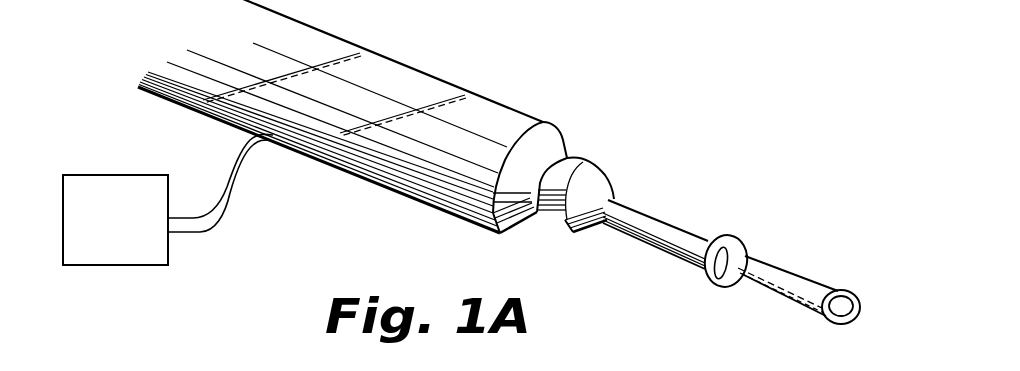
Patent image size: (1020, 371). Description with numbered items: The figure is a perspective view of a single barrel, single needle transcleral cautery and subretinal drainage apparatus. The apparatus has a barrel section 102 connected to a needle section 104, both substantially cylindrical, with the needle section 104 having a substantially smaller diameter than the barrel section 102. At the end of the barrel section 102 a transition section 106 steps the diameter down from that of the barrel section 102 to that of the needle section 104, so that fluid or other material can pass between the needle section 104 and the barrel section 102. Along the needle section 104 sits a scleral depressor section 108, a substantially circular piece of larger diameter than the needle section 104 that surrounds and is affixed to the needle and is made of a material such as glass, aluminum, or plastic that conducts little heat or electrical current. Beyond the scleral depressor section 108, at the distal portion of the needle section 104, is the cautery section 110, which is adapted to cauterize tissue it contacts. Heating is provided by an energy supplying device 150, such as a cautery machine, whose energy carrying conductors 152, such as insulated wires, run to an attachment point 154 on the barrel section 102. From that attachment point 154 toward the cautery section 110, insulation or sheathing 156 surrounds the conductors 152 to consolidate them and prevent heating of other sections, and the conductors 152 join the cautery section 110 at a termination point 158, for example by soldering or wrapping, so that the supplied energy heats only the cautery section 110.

The barrel section 102 is at (382, 55).
The needle section 104 is at (832, 351).
The transition section 106 is at (632, 134).
The scleral depressor section 108 is at (727, 238).
The cautery section 110 is at (895, 239).
The energy supplying device 150 is at (137, 227).
The energy carrying conductors 152 is at (228, 197).
The attachment point 154 is at (288, 140).
The insulation or sheathing 156 is at (483, 218).
The termination point 158 is at (768, 281).